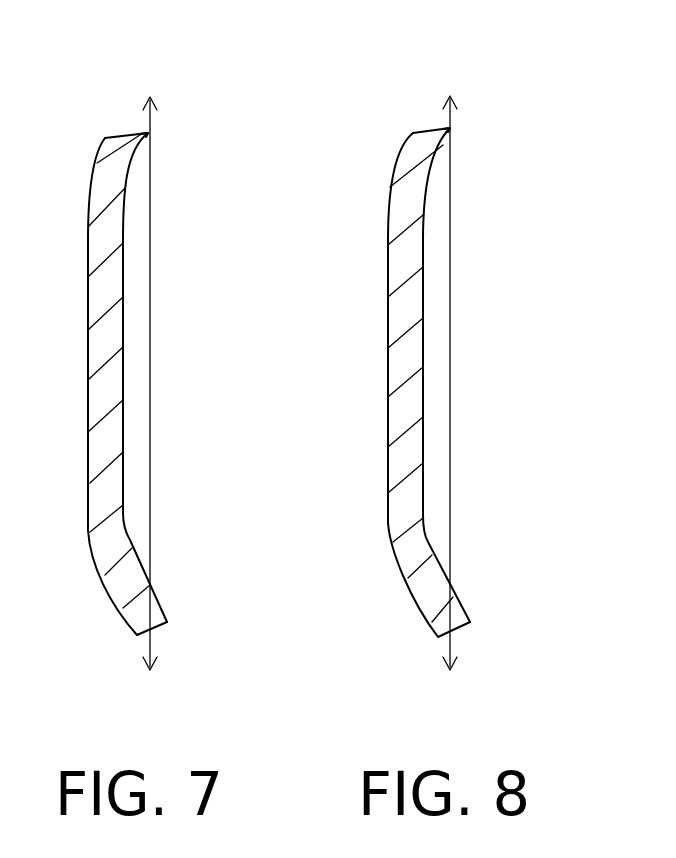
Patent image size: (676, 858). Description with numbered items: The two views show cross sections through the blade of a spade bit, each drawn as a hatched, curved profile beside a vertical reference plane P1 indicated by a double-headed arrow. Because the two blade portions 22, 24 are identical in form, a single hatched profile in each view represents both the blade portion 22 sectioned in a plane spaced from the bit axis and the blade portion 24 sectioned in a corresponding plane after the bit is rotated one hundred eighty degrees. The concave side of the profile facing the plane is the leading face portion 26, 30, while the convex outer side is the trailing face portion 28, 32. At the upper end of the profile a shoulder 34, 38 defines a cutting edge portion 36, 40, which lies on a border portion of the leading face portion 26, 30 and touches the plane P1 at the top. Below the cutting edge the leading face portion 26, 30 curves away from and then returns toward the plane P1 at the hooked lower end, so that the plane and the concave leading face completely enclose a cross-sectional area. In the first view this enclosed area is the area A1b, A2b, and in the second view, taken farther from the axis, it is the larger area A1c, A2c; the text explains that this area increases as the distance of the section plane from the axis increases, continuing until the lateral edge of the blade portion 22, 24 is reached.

In FIG. 7, the blade portion 22 is at (164, 330).
In FIG. 8, the blade portion 22 is at (441, 332).
In FIG. 7, the blade portion 24 is at (164, 330).
In FIG. 8, the blade portion 24 is at (441, 332).
In FIG. 7, the leading face portion 26 is at (195, 431).
In FIG. 8, the leading face portion 26 is at (492, 431).
In FIG. 7, the leading face portion 30 is at (123, 440).
In FIG. 8, the leading face portion 30 is at (423, 447).
In FIG. 7, the trailing face portion 28 is at (94, 386).
In FIG. 8, the trailing face portion 28 is at (386, 385).
In FIG. 7, the trailing face portion 32 is at (88, 502).
In FIG. 8, the trailing face portion 32 is at (388, 507).
In FIG. 7, the shoulder 34 is at (113, 82).
In FIG. 8, the shoulder 34 is at (413, 80).
In FIG. 7, the shoulder 38 is at (132, 135).
In FIG. 8, the shoulder 38 is at (432, 128).
In FIG. 7, the cutting edge portion 36 is at (197, 104).
In FIG. 8, the cutting edge portion 36 is at (501, 100).
In FIG. 7, the cutting edge portion 40 is at (148, 133).
In FIG. 8, the cutting edge portion 40 is at (450, 128).
In FIG. 7, the area A1b is at (215, 188).
In FIG. 7, the area A2b is at (137, 240).
In FIG. 8, the area A1c is at (501, 186).
In FIG. 8, the area A2c is at (438, 240).
In FIG. 7, the plane P1 is at (150, 362).
In FIG. 8, the plane P1 is at (450, 368).